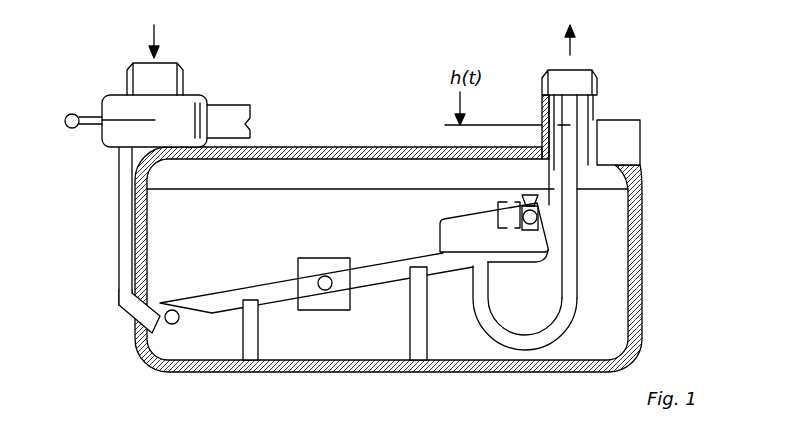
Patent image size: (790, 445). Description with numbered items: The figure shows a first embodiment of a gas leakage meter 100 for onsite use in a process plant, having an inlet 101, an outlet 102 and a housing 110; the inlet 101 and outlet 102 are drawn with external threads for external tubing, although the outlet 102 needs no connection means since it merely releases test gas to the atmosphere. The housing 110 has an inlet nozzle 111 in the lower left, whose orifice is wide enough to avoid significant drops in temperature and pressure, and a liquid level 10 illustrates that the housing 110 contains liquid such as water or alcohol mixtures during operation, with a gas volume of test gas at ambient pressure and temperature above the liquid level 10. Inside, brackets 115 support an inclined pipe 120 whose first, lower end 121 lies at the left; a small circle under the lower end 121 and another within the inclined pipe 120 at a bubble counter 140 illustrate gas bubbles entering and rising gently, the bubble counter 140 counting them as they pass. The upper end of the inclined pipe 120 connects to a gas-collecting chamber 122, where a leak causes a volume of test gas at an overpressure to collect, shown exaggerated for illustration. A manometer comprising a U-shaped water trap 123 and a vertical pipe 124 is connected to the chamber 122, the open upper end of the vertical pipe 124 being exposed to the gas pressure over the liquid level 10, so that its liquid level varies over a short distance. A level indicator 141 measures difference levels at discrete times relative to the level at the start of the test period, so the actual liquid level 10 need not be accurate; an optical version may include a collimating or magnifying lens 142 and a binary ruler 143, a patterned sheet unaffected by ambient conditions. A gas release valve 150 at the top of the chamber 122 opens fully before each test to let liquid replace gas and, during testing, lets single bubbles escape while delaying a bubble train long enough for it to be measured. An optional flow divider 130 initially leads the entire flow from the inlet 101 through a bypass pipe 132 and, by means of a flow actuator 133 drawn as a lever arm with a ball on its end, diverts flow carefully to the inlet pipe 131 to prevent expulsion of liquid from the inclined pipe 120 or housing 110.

The leakage meter 100 is at (362, 34).
The liquid level 10 is at (237, 190).
The inlet 101 is at (143, 68).
The outlet 102 is at (573, 72).
The housing 110 is at (316, 147).
The inlet nozzle 111 is at (133, 312).
The brackets 115 is at (259, 340).
The inclined pipe 120 is at (272, 270).
The first, lower end 121 is at (190, 281).
The gas-collecting chamber 122 is at (438, 238).
The U-shaped water trap 123 is at (537, 335).
The vertical pipe 124 is at (570, 283).
The flow divider 130 is at (112, 100).
The inlet pipe 131 is at (122, 218).
The bypass pipe 132 is at (228, 113).
The flow actuator 133 is at (90, 125).
The bubble counter 140 is at (320, 263).
The level indicator 141 is at (631, 148).
The collimating and/or magnifying lens 142 is at (592, 105).
The binary ruler 143 is at (543, 107).
The gas release valve 150 is at (510, 195).